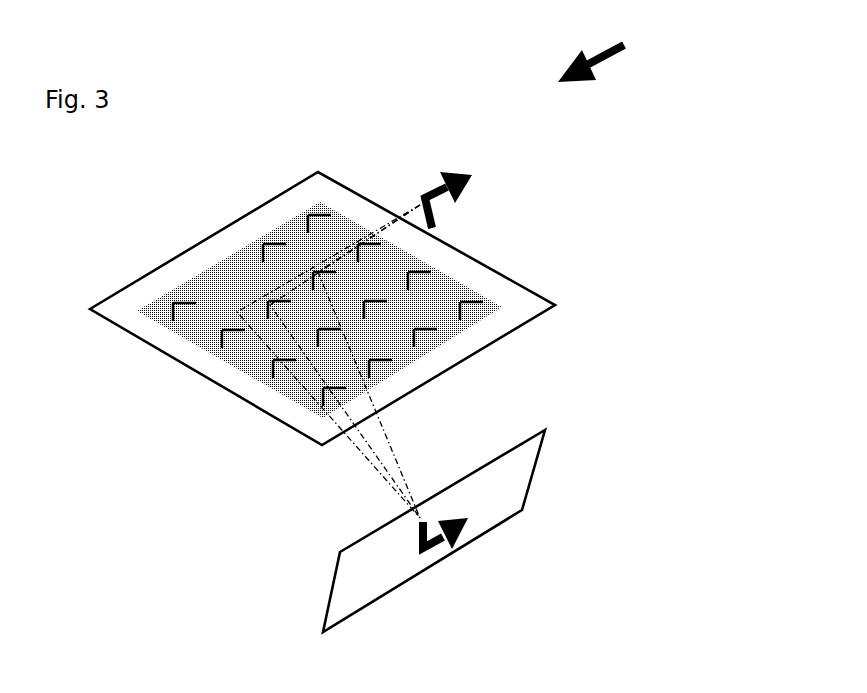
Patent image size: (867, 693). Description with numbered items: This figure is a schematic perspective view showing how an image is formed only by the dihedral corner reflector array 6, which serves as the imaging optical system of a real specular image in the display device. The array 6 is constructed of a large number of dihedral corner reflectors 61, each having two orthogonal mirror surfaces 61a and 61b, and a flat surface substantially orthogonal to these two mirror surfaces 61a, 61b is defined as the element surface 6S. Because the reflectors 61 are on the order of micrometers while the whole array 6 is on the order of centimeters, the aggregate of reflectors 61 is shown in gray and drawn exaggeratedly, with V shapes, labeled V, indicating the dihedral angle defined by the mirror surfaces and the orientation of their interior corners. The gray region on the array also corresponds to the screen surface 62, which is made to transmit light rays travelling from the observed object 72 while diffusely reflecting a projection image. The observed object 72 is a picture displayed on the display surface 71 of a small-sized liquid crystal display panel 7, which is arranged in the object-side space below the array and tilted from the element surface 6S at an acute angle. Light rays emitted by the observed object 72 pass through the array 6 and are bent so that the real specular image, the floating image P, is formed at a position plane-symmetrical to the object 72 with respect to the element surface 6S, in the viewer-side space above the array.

The dihedral corner reflector array 6 is at (324, 308).
The element surface 6S is at (198, 242).
The dihedral corner reflector 61 is at (397, 314).
The mirror surface 61a is at (521, 341).
The mirror surface 61b is at (473, 304).
The screen surface 62 is at (297, 218).
The liquid crystal display panel 7 is at (435, 531).
The display surface 71 is at (333, 585).
The observed object 72 is at (448, 515).
The floating image P is at (427, 183).
The V shape V is at (616, 44).